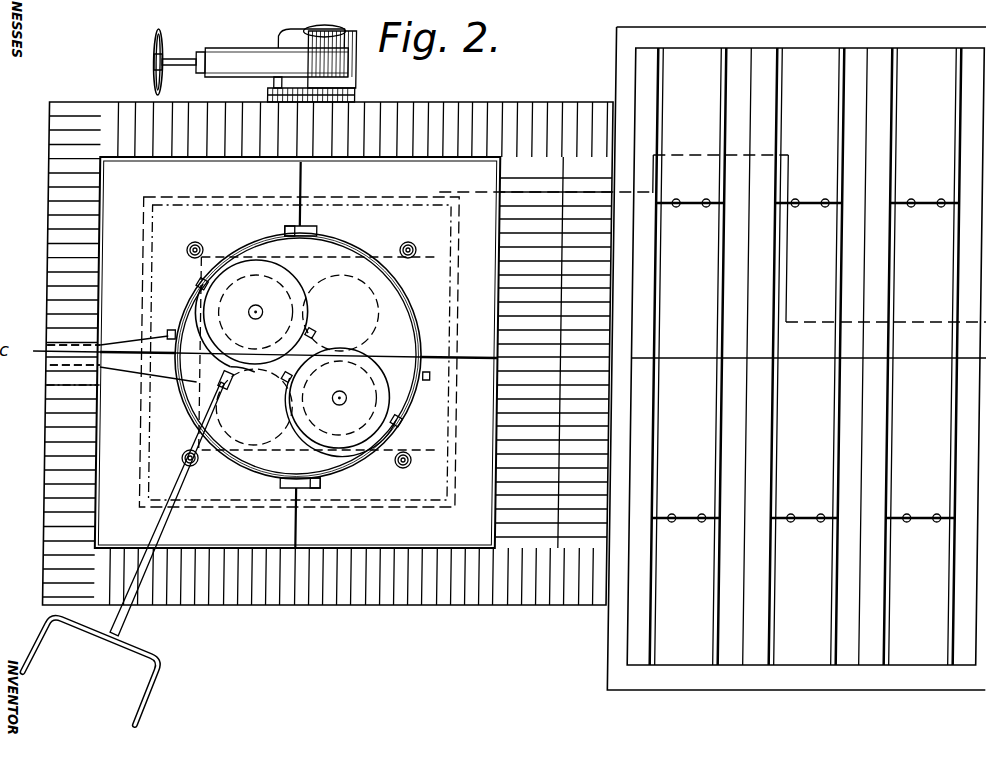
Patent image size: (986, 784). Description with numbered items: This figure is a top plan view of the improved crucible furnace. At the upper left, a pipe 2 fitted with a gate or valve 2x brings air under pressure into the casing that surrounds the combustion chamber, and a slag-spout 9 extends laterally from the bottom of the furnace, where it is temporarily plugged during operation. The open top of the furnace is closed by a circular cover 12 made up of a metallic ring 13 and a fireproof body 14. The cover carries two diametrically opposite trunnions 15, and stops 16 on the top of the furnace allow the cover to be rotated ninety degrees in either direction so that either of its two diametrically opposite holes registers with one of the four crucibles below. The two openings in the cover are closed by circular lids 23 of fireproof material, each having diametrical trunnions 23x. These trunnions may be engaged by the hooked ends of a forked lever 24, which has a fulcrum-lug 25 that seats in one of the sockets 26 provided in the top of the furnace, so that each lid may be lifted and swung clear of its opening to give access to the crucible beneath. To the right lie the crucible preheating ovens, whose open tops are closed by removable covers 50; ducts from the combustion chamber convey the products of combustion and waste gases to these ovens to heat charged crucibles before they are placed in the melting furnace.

The pipe 2 is at (342, 86).
The gate or valve 2x is at (297, 37).
The slag-spout 9 is at (50, 363).
The circular cover 12 is at (296, 371).
The metallic ring 13 is at (350, 470).
The fireproof body 14 is at (336, 252).
The trunnions 15 is at (306, 224).
The stops 16 is at (284, 231).
The circular lids 23 is at (297, 354).
The diametrical trunnions 23x is at (417, 428).
The forked lever 24 is at (197, 446).
The fulcrum-lug 25 is at (184, 462).
The sockets 26 is at (194, 243).
The removable covers 50 is at (806, 360).